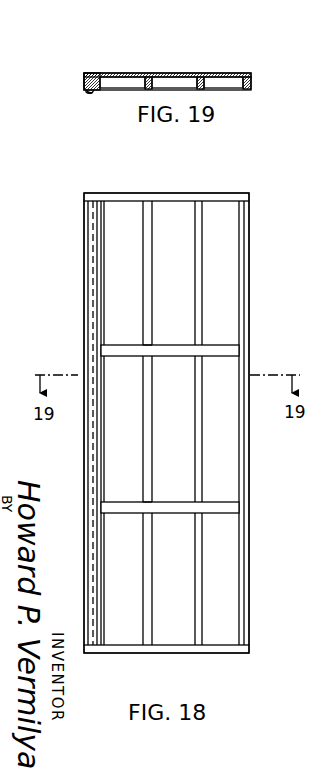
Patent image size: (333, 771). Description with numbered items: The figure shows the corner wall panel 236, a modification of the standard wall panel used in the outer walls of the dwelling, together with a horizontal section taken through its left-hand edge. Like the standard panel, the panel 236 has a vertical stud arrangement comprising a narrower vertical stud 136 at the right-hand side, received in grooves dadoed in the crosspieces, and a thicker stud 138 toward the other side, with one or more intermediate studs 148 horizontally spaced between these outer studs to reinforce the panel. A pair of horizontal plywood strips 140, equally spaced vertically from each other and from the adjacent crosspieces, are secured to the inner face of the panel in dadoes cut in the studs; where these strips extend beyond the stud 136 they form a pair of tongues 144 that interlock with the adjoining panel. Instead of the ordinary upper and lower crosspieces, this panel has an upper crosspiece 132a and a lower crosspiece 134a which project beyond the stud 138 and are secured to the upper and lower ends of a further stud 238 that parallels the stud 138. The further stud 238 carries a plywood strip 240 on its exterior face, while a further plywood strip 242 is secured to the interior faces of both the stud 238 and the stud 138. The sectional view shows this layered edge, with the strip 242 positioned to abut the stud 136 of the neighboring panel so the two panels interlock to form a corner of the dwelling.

In FIG. 18, the upper crosspiece 132a is at (137, 200).
In FIG. 18, the lower crosspiece 134a is at (191, 650).
In FIG. 18, the vertical stud 136 is at (242, 238).
In FIG. 19, the stud 138 is at (108, 82).
In FIG. 18, the stud 138 is at (104, 306).
In FIG. 18, the horizontal strips 140 is at (157, 352).
In FIG. 18, the tongues 144 is at (243, 352).
In FIG. 19, the intermediate studs 148 is at (174, 83).
In FIG. 18, the intermediate studs 148 is at (196, 257).
In FIG. 18, the panel 236 is at (176, 189).
In FIG. 19, the further stud 238 is at (92, 73).
In FIG. 18, the further stud 238 is at (91, 447).
In FIG. 19, the plywood strip 240 is at (84, 81).
In FIG. 18, the plywood strip 240 is at (84, 224).
In FIG. 19, the further plywood strip 242 is at (92, 93).
In FIG. 18, the further plywood strip 242 is at (92, 288).